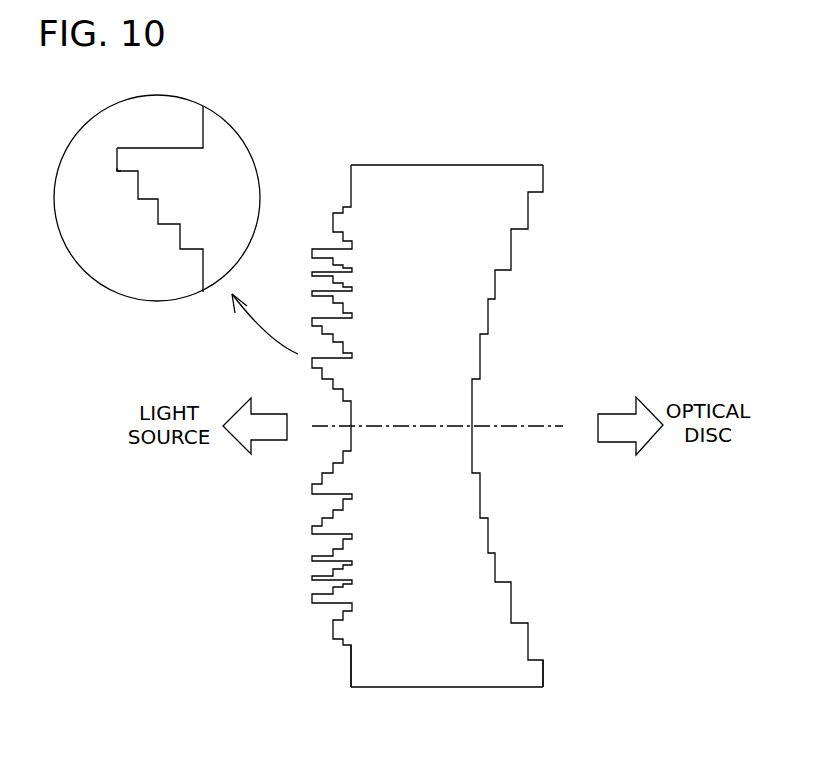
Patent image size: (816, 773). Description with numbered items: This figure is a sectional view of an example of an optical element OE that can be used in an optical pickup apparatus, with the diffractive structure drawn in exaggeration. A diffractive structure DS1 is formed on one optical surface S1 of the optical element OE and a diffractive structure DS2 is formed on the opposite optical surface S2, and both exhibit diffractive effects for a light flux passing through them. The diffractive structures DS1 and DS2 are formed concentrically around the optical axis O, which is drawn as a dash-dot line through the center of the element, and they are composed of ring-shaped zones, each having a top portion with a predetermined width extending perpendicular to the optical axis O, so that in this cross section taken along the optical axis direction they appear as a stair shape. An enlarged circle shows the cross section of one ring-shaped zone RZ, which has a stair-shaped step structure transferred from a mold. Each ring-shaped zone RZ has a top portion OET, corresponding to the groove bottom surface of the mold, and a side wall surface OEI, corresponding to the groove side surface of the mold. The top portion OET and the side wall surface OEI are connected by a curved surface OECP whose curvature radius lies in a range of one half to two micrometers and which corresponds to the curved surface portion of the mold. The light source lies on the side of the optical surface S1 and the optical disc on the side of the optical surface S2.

The optical element OE is at (453, 443).
The diffractive structure DS1 is at (311, 238).
The diffractive structure DS2 is at (529, 273).
The optical surface S1 is at (350, 670).
The optical surface S2 is at (544, 678).
The optical axis O is at (437, 442).
The ring-shaped zone RZ is at (167, 143).
The top portion OET is at (117, 158).
The curved surface OECP is at (119, 172).
The side wall surface OEI is at (127, 173).